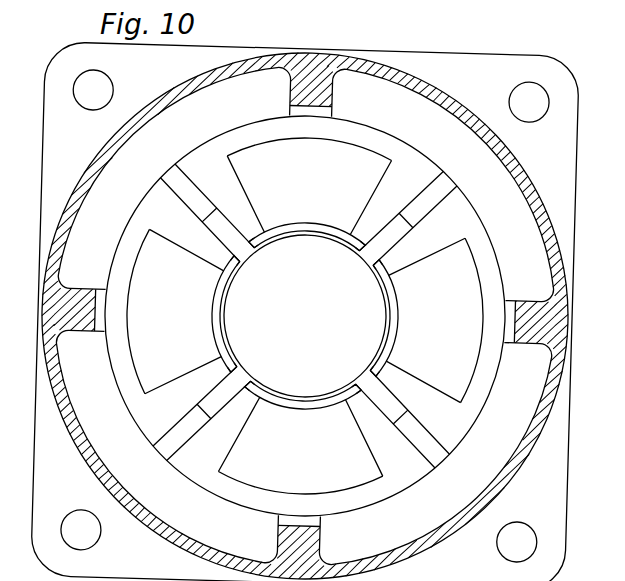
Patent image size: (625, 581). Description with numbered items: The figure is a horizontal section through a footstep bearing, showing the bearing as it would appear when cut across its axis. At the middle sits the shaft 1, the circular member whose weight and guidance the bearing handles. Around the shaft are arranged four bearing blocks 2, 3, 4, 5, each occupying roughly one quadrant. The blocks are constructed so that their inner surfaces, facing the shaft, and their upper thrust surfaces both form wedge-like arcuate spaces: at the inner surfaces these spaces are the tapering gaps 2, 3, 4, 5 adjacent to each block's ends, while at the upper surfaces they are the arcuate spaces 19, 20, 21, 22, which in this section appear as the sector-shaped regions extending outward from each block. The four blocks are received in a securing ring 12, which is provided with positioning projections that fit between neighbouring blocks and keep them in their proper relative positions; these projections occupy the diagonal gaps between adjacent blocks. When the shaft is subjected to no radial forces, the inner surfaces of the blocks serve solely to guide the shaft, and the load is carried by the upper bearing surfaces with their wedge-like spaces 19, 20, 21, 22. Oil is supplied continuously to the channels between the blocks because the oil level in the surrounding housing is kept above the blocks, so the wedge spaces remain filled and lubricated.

The rotor 1 is at (305, 316).
The bearing block 2 is at (303, 377).
The bearing block 3 is at (247, 315).
The bearing block 4 is at (306, 255).
The bearing block 5 is at (368, 317).
The securing ring 12 is at (318, 307).
The wedge-like arcuate space 19 is at (301, 450).
The wedge-like arcuate space 20 is at (172, 304).
The wedge-like arcuate space 21 is at (319, 179).
The wedge-like arcuate space 22 is at (451, 320).